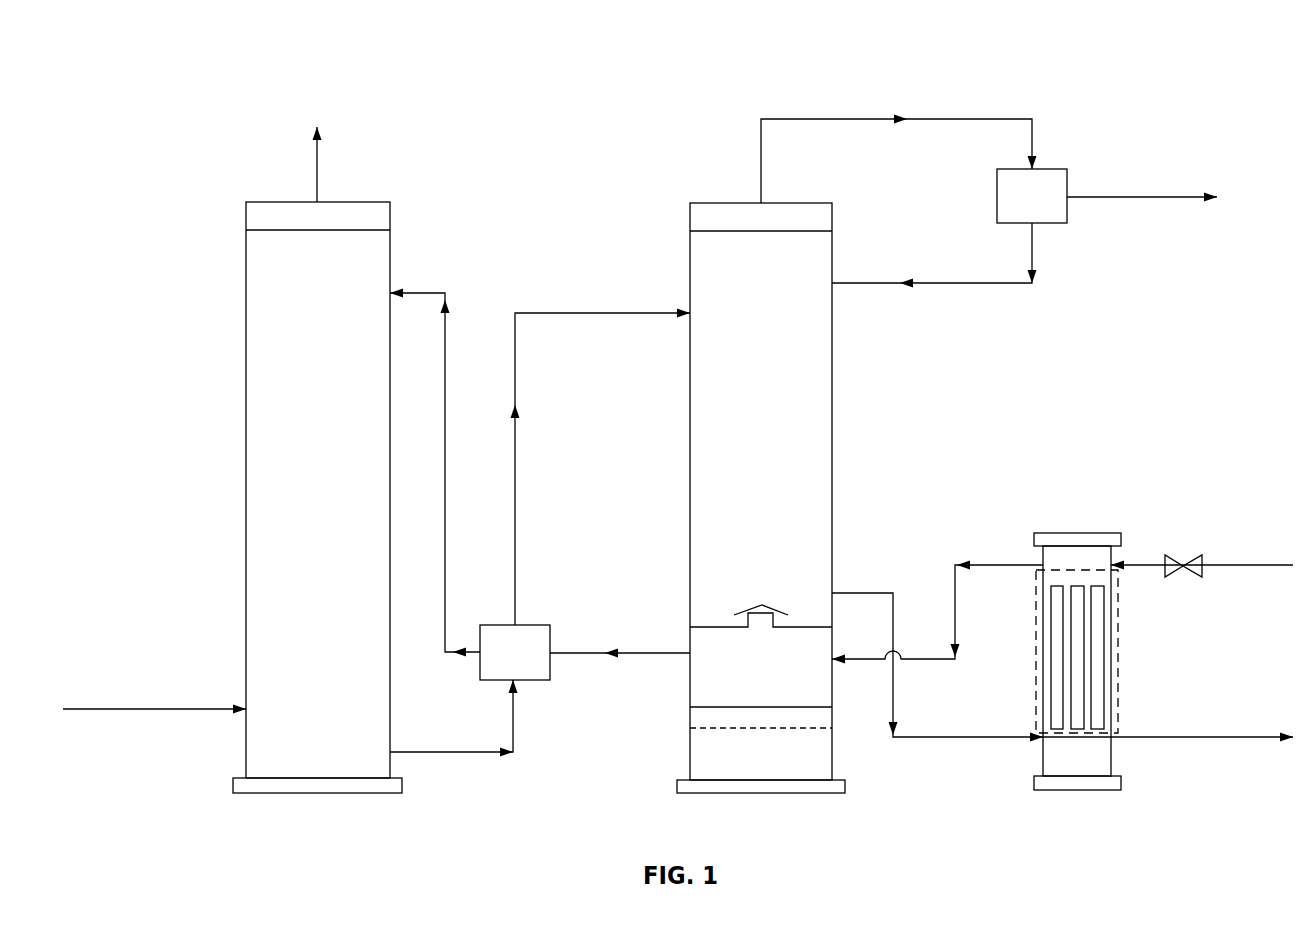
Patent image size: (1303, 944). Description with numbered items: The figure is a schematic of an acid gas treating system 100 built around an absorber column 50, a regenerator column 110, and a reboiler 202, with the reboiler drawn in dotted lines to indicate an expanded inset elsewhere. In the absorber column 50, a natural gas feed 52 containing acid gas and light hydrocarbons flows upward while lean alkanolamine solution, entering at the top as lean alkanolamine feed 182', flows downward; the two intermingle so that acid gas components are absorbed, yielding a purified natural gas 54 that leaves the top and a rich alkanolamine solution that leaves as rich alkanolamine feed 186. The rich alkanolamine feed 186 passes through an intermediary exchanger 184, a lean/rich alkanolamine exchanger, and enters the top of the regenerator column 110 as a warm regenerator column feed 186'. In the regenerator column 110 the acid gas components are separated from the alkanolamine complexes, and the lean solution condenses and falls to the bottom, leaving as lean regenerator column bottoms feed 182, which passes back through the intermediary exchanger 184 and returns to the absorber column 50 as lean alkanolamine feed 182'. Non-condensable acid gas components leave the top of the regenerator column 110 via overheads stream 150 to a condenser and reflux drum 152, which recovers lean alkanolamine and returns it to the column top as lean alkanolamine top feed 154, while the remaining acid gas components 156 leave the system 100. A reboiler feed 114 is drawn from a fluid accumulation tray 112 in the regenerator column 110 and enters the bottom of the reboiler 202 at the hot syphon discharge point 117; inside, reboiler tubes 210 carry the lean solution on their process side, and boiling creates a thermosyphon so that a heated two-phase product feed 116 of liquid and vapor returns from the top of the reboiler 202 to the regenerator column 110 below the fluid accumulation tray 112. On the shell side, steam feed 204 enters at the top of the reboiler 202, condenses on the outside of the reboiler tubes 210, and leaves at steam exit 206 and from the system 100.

The system 100 is at (126, 72).
The absorber column 50 is at (332, 515).
The natural gas feed 52 is at (142, 709).
The purified natural gas 54 is at (313, 164).
The regenerator column 110 is at (782, 515).
The fluid accumulation tray 112 is at (715, 627).
The reboiler feed 114 is at (866, 593).
The heated two-phase product feed 116 is at (988, 565).
The hot syphon discharge point 117 is at (1042, 741).
The overheads stream 150 is at (838, 118).
The condenser and reflux drum 152 is at (1052, 212).
The lean alkanolamine top feed 154 is at (930, 283).
The acid gas components 156 is at (1115, 197).
The lean regenerator column bottoms feed 182 is at (620, 686).
The lean alkanolamine feed 182' is at (447, 473).
The intermediary exchanger 184 is at (535, 668).
The rich alkanolamine feed 186 is at (454, 751).
The regenerator column feed 186' is at (601, 438).
The reboiler 202 is at (1076, 533).
The steam feed 204 is at (1243, 565).
The steam exit 206 is at (1200, 737).
The reboiler tubes 210 is at (1098, 648).